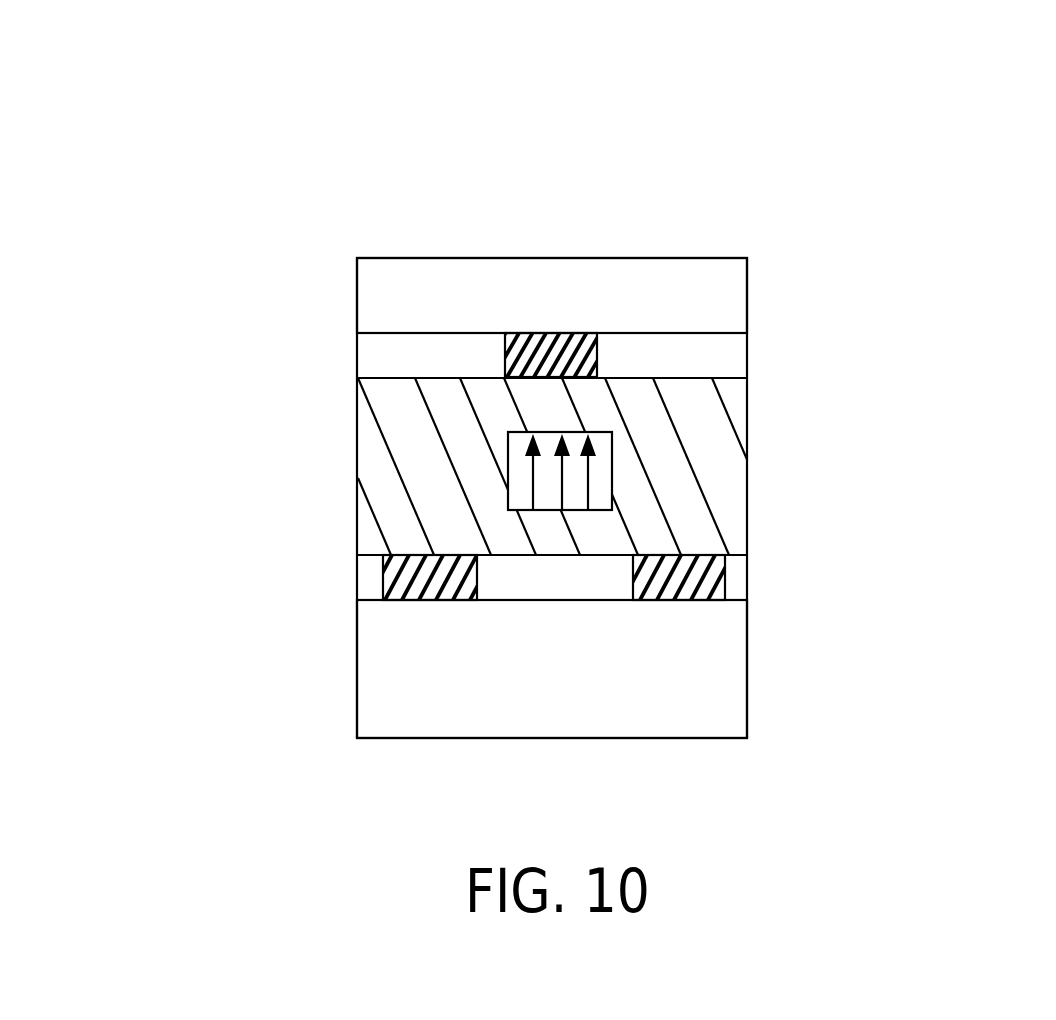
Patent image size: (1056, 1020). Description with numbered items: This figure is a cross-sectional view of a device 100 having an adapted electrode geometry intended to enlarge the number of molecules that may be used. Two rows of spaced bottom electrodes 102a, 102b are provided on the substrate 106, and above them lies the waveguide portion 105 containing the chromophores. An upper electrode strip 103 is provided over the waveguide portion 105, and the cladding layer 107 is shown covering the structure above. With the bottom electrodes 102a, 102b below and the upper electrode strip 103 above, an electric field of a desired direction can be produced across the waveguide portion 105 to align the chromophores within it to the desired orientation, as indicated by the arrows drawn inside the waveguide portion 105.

The magnetic tunnel junction device 100 is at (652, 178).
The upper electrode strip 103 is at (552, 355).
The waveguide portion 105 is at (528, 487).
The cladding layer 107 is at (702, 290).
The bottom electrode 102a is at (723, 573).
The bottom electrode 102b is at (385, 578).
The substrate 106 is at (397, 702).